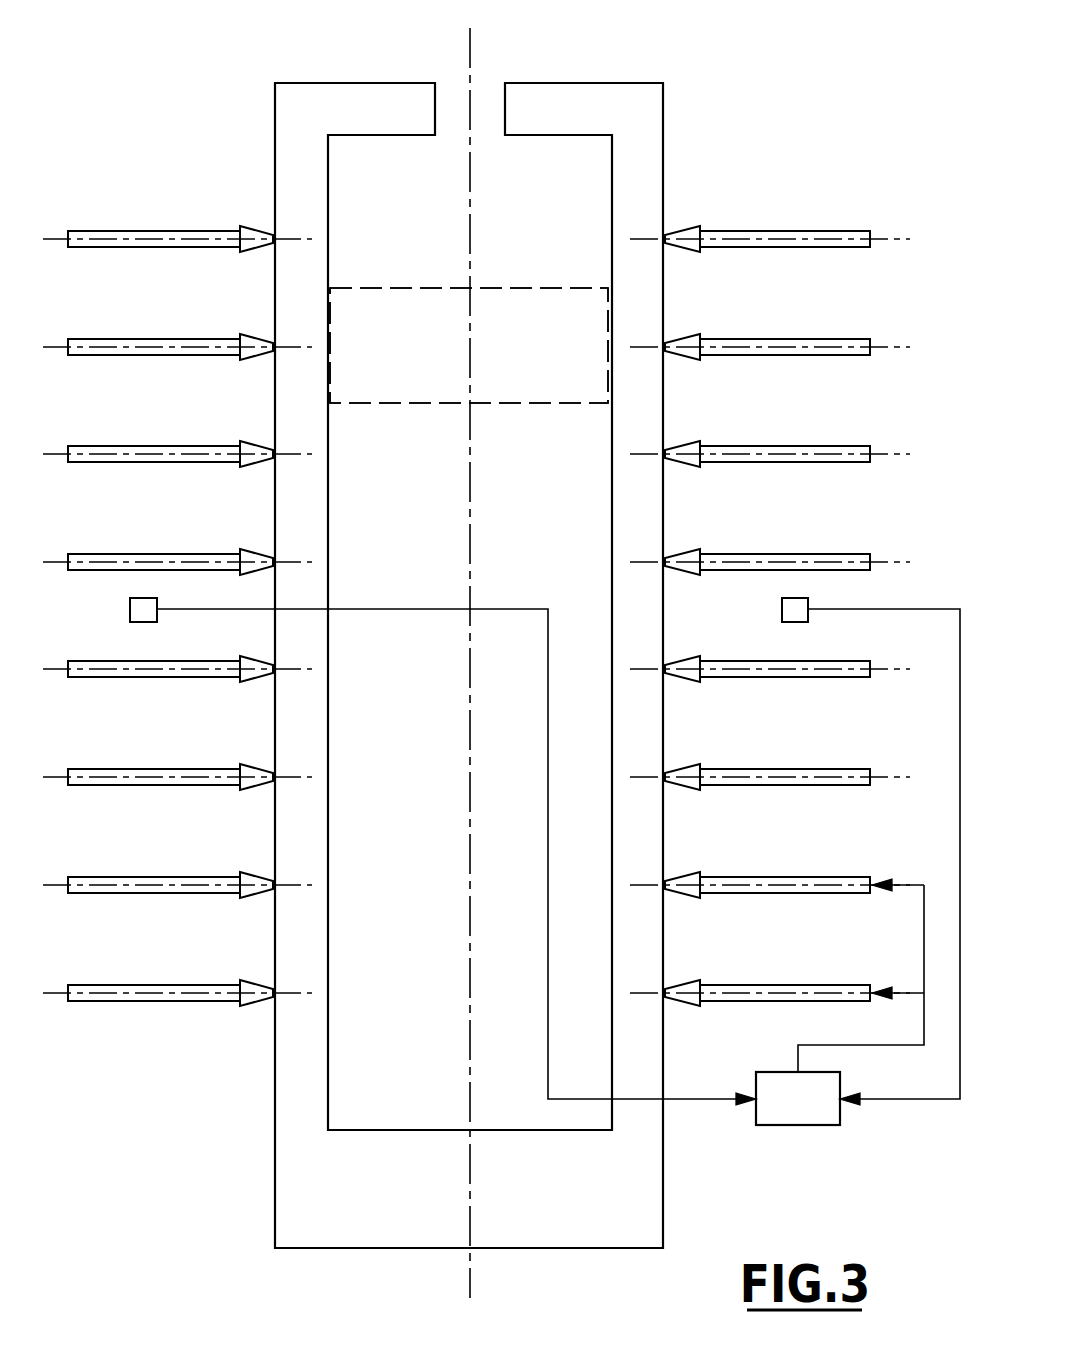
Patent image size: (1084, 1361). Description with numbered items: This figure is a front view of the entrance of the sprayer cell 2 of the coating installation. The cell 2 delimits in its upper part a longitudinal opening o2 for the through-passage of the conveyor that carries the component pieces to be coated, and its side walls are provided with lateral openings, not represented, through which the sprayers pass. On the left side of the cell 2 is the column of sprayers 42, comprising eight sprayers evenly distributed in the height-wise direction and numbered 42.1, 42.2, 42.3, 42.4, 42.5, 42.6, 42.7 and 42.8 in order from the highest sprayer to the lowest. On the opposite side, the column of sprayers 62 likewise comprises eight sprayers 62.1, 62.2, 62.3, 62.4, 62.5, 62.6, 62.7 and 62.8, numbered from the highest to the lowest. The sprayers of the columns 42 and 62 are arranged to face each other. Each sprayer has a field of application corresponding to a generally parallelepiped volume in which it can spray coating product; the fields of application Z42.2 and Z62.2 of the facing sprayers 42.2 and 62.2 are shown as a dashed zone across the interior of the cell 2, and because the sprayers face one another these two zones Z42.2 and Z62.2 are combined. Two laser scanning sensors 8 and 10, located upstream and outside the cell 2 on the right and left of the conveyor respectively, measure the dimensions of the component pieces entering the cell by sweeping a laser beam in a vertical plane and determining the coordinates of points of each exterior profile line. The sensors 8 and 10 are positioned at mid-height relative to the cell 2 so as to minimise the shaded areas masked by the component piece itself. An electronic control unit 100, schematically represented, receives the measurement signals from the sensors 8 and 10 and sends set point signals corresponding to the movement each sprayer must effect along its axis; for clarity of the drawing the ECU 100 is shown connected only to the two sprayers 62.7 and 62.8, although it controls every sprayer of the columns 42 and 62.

The cell 2 is at (300, 175).
The longitudinal opening o2 is at (486, 80).
The column of sprayers 42 is at (110, 147).
The sprayer 42.1 is at (196, 230).
The sprayer 42.2 is at (184, 338).
The sprayer 42.3 is at (157, 445).
The sprayer 42.4 is at (203, 553).
The sprayer 42.5 is at (185, 680).
The sprayer 42.6 is at (140, 768).
The sprayer 42.7 is at (190, 876).
The sprayer 42.8 is at (140, 984).
The column of sprayers 62 is at (847, 155).
The sprayer 62.1 is at (744, 230).
The sprayer 62.2 is at (746, 338).
The sprayer 62.3 is at (771, 445).
The sprayer 62.4 is at (726, 553).
The sprayer 62.5 is at (752, 680).
The sprayer 62.6 is at (791, 768).
The sprayer 62.7 is at (739, 876).
The sprayer 62.8 is at (799, 984).
The field of application Z42.2 is at (469, 345).
The field of application Z62.2 is at (469, 345).
The sensor 10 is at (130, 608).
The sensor 8 is at (782, 608).
The electronic control unit 100 is at (770, 1126).